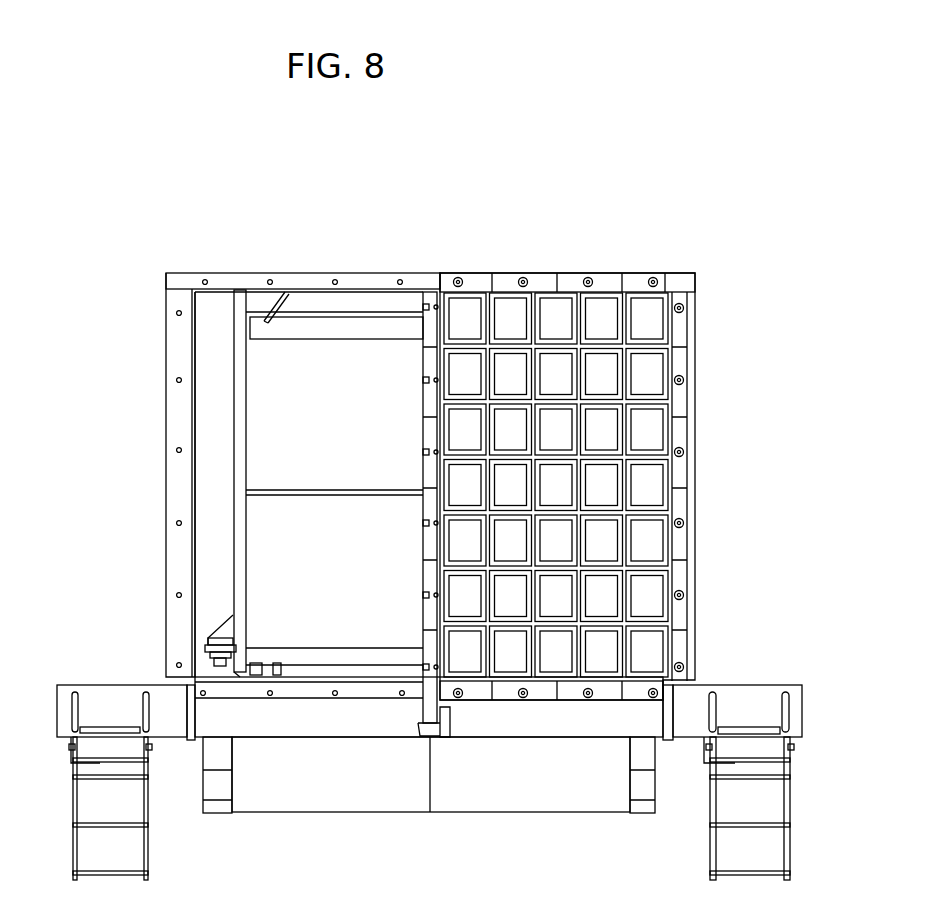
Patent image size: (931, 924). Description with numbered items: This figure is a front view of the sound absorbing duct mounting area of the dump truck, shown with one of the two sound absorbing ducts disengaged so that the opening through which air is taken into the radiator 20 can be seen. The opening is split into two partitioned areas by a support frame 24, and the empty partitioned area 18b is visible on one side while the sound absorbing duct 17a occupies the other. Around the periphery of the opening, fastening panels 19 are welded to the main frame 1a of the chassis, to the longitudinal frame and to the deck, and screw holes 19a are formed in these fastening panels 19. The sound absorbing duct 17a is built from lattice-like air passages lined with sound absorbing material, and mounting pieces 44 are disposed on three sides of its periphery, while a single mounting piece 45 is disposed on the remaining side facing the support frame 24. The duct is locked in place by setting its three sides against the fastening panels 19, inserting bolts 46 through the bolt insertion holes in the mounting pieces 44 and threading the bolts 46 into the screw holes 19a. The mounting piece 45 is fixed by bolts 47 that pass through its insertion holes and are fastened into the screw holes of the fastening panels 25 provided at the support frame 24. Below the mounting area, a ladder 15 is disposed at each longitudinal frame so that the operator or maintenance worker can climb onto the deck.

The main frame 1a is at (267, 727).
The ladder 15 is at (148, 837).
The sound absorbing duct 17a is at (540, 287).
The partitioned area 18b is at (200, 305).
The fastening panels 19 is at (360, 280).
The screw holes 19a is at (176, 380).
The radiator 20 is at (316, 325).
The support frame 24 is at (423, 430).
The fastening panels 25 is at (424, 453).
The mounting pieces 44 is at (477, 281).
The mounting piece 45 is at (423, 578).
The bolts 46 is at (652, 278).
The bolts 47 is at (424, 380).